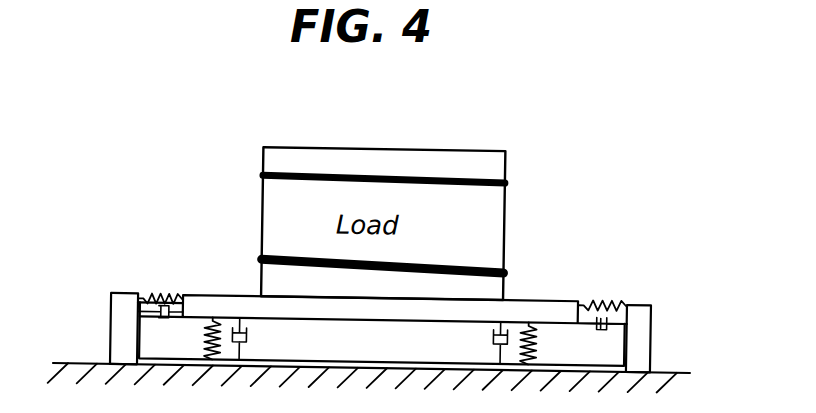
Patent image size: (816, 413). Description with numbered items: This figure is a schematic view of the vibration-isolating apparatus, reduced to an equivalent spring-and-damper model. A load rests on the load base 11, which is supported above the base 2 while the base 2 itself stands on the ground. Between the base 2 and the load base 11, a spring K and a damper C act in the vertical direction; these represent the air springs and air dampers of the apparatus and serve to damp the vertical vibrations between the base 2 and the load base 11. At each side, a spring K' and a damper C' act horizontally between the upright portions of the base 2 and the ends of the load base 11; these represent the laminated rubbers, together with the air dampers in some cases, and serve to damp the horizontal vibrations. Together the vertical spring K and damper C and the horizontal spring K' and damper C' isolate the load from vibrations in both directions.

The base 2 is at (650, 330).
The load base 11 is at (543, 292).
The spring K' is at (383, 275).
The damper C' is at (382, 334).
The spring K is at (365, 341).
The damper C is at (370, 341).